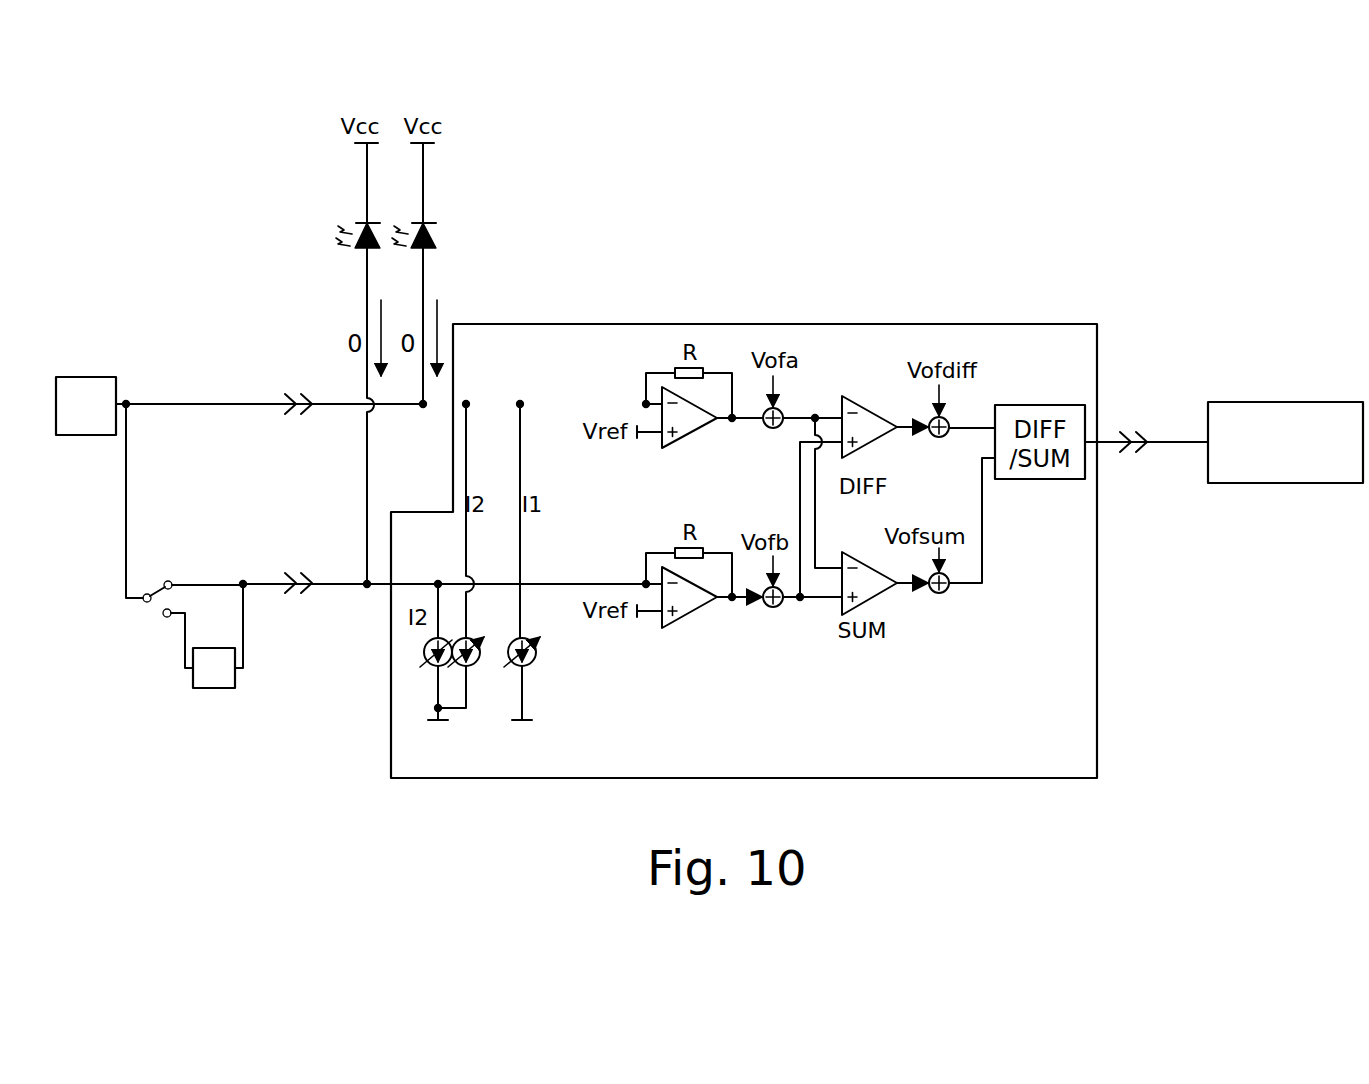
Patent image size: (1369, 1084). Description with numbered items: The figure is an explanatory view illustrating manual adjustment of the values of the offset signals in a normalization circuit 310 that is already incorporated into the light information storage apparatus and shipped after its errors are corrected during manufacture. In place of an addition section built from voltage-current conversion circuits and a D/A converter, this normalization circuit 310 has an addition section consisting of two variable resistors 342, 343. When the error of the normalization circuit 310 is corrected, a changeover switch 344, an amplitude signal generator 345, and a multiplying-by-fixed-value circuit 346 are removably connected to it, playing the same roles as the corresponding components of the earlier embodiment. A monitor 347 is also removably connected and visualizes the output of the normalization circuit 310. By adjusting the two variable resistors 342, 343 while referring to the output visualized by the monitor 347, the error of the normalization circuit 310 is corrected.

The normalization circuit 310 is at (869, 324).
The variable resistor 342 is at (534, 665).
The variable resistor 343 is at (426, 663).
The changeover switch 344 is at (163, 581).
The amplitude signal generator 345 is at (90, 377).
The multiplying-by-fixed-value circuit 346 is at (215, 688).
The monitor 347 is at (1233, 483).